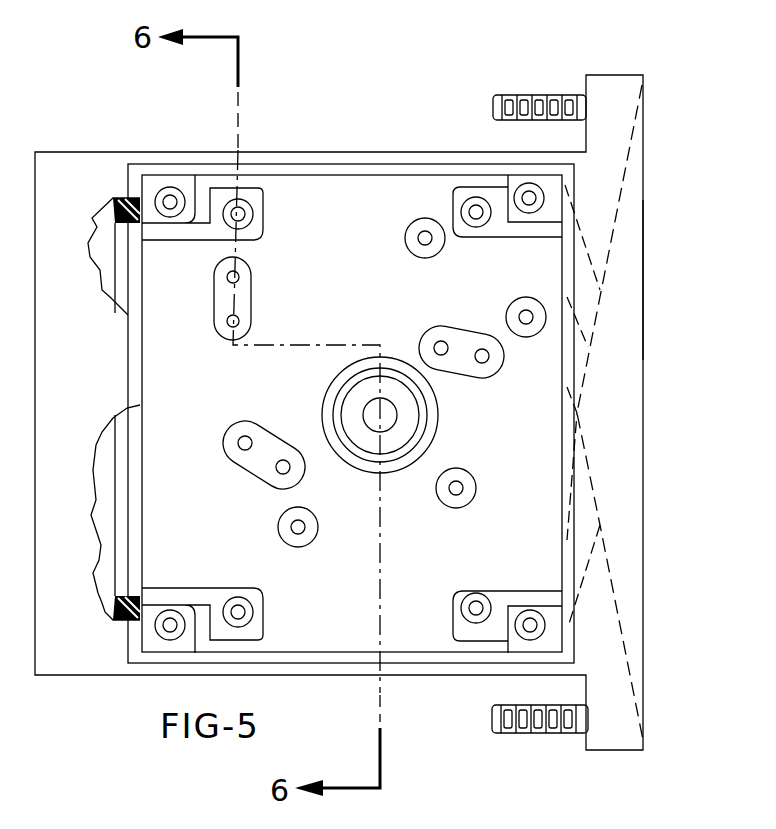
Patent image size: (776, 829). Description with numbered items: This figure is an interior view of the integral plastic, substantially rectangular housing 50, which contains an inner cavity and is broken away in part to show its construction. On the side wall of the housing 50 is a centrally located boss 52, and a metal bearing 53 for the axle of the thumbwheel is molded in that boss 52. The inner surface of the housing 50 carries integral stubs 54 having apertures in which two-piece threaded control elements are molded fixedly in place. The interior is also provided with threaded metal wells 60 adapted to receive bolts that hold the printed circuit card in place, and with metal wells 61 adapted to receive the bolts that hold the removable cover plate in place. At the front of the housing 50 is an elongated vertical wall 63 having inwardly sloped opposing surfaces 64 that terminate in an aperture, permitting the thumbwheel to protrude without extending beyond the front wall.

The housing 50 is at (662, 117).
The boss 52 is at (430, 428).
The metal bearing 53 is at (409, 412).
The stubs 54 is at (425, 217).
The threaded metal wells 60 is at (253, 212).
The metal wells 61 is at (160, 216).
The elongated vertical wall 63 is at (644, 277).
The inwardly sloped opposing surfaces 64 is at (618, 207).